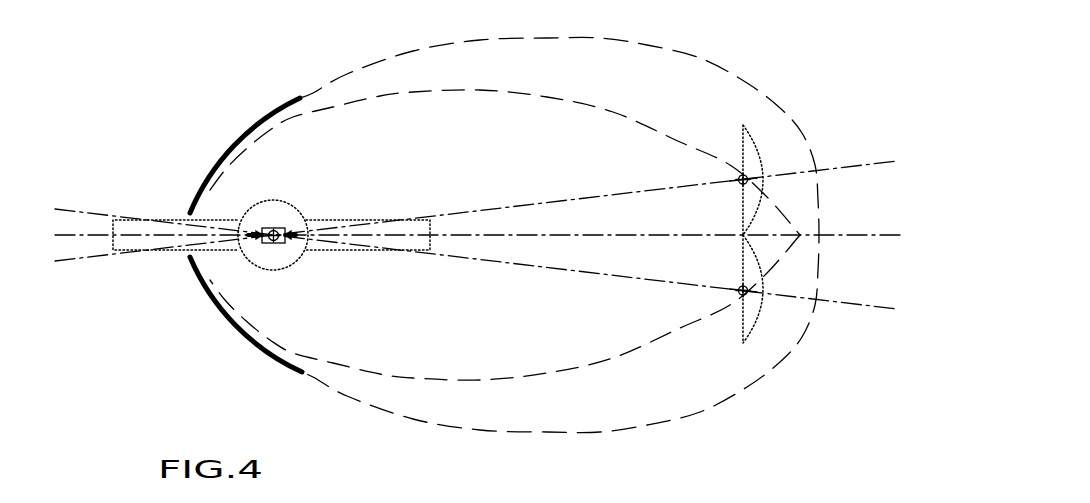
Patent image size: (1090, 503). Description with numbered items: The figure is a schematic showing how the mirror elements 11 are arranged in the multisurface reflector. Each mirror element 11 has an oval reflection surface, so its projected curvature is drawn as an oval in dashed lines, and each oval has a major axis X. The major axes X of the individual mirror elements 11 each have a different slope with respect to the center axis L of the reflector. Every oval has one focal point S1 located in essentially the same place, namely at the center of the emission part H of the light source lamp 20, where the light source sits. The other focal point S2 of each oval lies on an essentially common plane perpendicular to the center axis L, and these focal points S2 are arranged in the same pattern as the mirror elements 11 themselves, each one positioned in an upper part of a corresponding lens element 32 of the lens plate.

The mirror element 11 is at (253, 123).
The light source lamp 20 is at (350, 220).
The lens element 32 is at (763, 156).
The emission part H is at (276, 226).
The focal point S1 is at (273, 246).
The focal point S2 is at (740, 178).
The major axis X is at (500, 207).
The center axis L is at (73, 258).